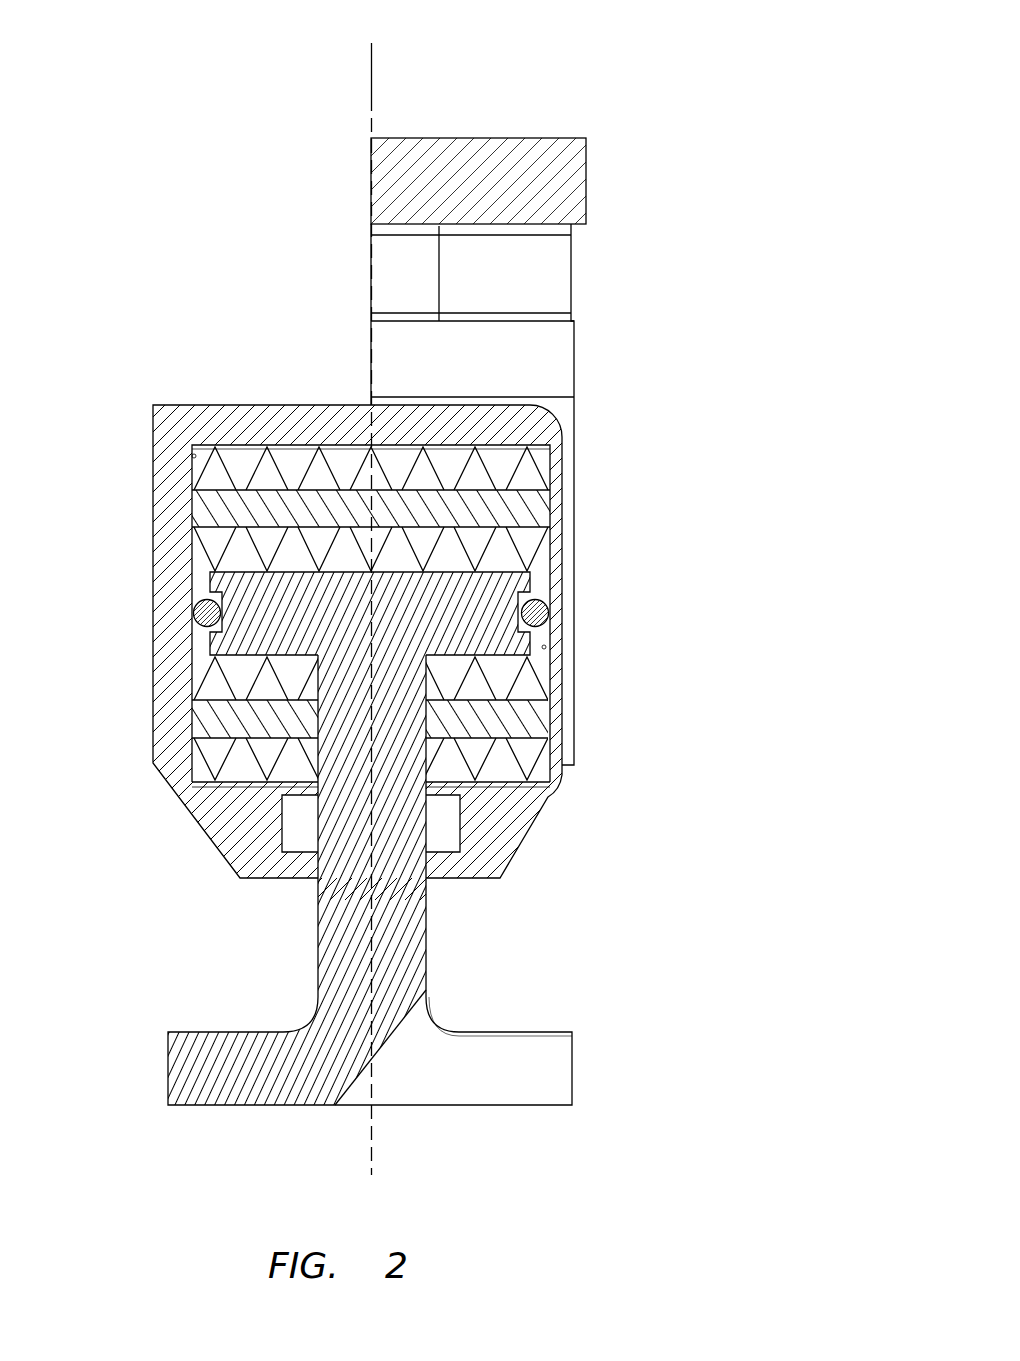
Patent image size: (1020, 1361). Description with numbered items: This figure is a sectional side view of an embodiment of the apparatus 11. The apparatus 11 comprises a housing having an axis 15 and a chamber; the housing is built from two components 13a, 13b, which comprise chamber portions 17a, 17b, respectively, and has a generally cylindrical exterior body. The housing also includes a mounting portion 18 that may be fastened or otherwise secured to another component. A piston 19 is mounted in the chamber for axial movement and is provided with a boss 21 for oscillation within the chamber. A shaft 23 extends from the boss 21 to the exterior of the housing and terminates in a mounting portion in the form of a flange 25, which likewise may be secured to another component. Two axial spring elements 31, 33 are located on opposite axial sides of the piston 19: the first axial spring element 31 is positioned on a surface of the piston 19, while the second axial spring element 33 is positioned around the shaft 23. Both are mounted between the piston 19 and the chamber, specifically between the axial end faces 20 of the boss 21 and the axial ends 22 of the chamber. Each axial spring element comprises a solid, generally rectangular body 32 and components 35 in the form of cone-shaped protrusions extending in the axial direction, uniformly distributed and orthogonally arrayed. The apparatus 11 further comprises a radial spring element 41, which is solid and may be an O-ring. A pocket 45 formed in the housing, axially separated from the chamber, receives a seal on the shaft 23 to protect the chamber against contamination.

The apparatus 11 is at (716, 40).
The housing component 13a is at (588, 178).
The housing component 13b is at (160, 412).
The axis 15 is at (372, 97).
The chamber portion 17a is at (545, 647).
The chamber portion 17b is at (192, 455).
The mounting portion 18 is at (371, 355).
The piston 19 is at (250, 957).
The axial end face 20 is at (235, 575).
The boss 21 is at (532, 580).
The axial end of chamber 22 is at (250, 450).
The shaft 23 is at (400, 940).
The flange 25 is at (473, 1092).
The first axial spring element 31 is at (508, 442).
The body 32 is at (200, 508).
The second axial spring element 33 is at (504, 766).
The components 35 is at (528, 467).
The radial spring element 41 is at (548, 615).
The pocket 45 is at (452, 830).